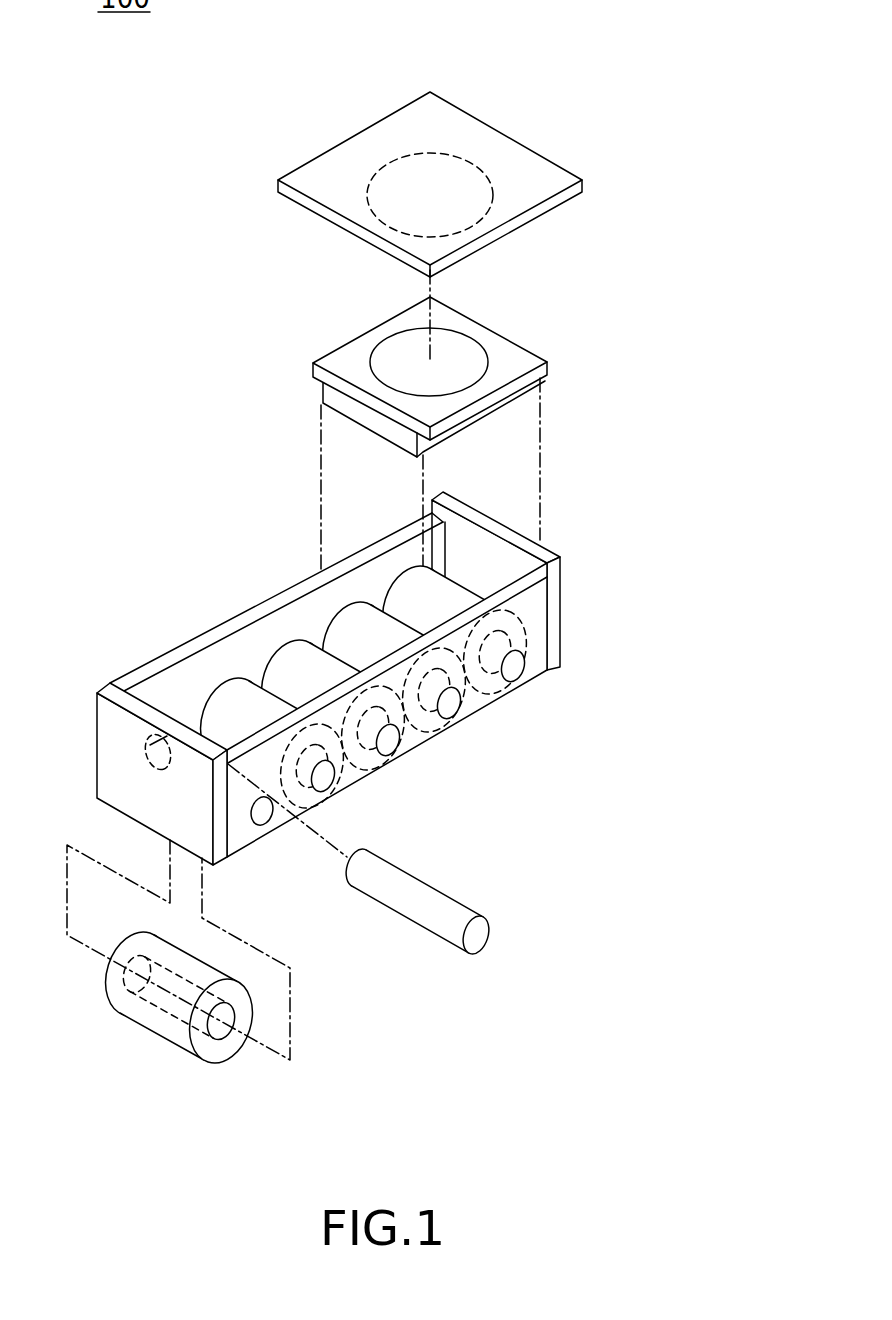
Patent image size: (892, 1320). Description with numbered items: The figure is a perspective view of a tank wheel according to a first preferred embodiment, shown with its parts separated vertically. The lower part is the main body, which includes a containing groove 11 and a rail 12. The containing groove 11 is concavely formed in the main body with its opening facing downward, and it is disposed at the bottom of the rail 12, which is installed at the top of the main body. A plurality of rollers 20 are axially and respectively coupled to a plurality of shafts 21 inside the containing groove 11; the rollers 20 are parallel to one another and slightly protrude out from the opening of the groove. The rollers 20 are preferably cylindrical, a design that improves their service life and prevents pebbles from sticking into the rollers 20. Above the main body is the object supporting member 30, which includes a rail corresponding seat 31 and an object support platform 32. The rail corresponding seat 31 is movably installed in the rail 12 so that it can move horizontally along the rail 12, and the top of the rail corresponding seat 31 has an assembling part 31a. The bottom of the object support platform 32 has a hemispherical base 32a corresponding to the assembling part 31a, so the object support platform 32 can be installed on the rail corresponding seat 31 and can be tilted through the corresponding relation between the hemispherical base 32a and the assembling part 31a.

The containing groove 11 is at (472, 578).
The rail 12 is at (537, 572).
The rollers 20 is at (223, 700).
The shafts 21 is at (402, 746).
The object supporting member 30 is at (616, 212).
The rail corresponding seat 31 is at (465, 361).
The assembling part 31a is at (457, 340).
The object support platform 32 is at (447, 184).
The hemispherical base 32a is at (428, 228).